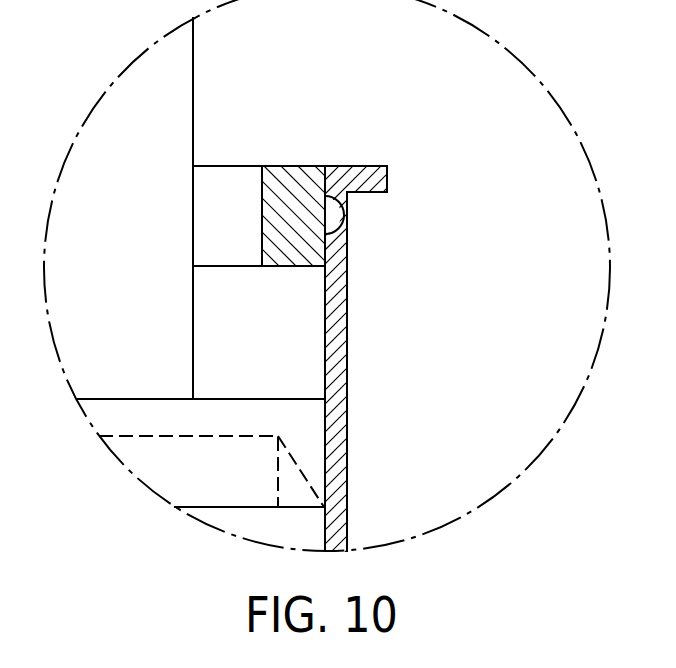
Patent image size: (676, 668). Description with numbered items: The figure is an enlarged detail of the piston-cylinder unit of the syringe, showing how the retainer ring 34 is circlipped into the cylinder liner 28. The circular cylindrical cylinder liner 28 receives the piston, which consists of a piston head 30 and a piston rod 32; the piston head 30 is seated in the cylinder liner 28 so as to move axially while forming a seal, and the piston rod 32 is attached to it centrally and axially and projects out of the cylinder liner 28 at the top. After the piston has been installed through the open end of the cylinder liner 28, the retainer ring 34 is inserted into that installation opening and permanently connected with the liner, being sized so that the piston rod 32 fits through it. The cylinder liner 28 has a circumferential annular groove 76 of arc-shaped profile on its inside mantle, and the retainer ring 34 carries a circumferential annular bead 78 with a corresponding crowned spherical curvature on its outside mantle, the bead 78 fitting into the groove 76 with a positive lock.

The cylinder liner 28 is at (337, 466).
The piston head 30 is at (259, 421).
The piston rod 32 is at (176, 113).
The retainer ring 34 is at (277, 184).
The annular groove 76 is at (344, 216).
The annular bead 78 is at (322, 224).